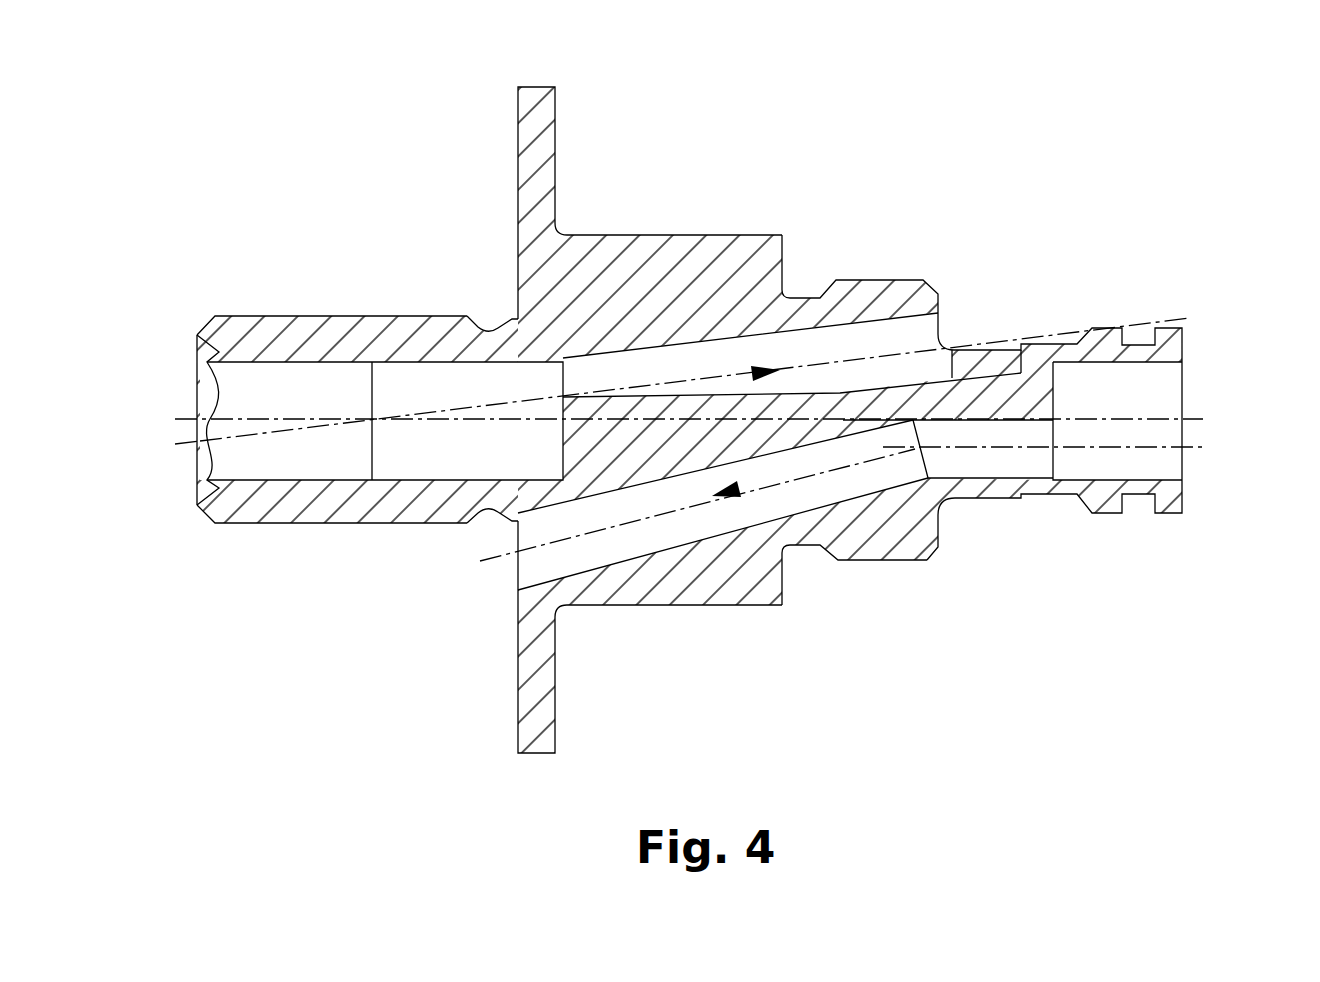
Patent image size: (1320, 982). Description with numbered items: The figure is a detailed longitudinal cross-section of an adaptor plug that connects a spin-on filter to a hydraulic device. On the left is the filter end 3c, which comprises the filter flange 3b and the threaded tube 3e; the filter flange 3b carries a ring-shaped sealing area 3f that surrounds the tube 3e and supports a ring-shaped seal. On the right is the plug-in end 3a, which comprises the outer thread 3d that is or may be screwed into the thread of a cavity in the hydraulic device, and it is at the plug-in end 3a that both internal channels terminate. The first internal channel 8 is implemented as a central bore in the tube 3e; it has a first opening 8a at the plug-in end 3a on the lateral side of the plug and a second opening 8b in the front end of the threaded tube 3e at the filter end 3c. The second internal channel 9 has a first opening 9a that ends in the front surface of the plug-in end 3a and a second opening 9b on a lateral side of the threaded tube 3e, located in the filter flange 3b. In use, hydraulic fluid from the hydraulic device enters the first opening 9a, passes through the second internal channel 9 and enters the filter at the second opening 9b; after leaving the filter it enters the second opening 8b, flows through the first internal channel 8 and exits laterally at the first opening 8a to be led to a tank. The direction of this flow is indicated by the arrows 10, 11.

The plug-in end 3a is at (982, 280).
The filter flange 3b is at (562, 125).
The filter end 3c is at (402, 230).
The outer thread 3d is at (905, 572).
The threaded tube 3e is at (316, 318).
The ring-shaped sealing area 3f is at (518, 676).
The first internal channel 8 is at (862, 345).
The first opening of the first internal channel 8a is at (953, 347).
The second opening of the first internal channel 8b is at (178, 443).
The second internal channel 9 is at (817, 482).
The first opening of the second internal channel 9a is at (1182, 446).
The second opening of the second internal channel 9b is at (520, 555).
The arrow 10 is at (752, 503).
The arrow 11 is at (740, 368).